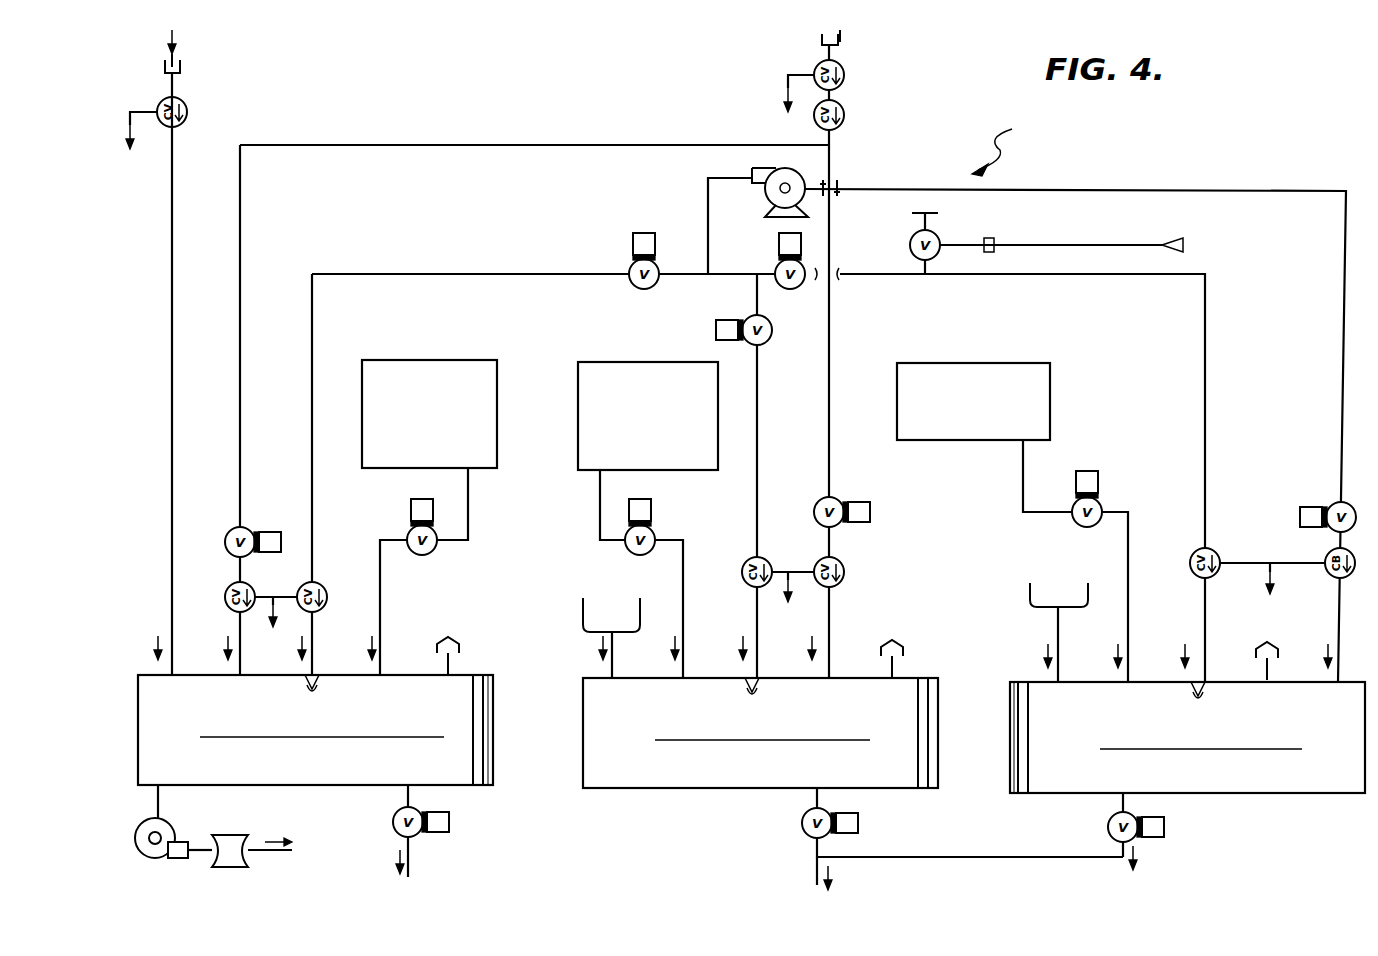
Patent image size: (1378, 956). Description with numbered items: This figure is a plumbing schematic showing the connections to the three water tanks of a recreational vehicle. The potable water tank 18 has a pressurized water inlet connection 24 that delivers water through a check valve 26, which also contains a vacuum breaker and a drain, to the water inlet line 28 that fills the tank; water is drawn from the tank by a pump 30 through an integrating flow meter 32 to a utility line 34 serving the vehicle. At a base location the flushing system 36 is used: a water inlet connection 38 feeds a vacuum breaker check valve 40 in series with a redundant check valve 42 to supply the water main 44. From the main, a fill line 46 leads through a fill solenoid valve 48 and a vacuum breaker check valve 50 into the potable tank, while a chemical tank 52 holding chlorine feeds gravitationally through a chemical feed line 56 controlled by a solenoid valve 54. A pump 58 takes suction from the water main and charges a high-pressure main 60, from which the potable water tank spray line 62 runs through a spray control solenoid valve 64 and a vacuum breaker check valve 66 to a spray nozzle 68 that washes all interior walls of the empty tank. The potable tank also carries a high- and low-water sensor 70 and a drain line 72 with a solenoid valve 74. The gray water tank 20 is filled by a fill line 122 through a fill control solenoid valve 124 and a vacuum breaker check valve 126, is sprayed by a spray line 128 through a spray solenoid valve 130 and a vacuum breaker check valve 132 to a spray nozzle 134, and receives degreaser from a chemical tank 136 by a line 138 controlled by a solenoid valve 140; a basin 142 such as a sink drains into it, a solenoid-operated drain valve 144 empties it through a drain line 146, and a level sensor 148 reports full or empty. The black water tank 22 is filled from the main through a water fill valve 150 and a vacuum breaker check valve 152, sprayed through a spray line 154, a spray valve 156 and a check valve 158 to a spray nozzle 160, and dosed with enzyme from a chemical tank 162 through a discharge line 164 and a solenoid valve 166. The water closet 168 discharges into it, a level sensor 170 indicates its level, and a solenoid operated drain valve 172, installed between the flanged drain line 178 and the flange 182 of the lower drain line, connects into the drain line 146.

The potable water tank 18 is at (399, 675).
The gray water tank 20 is at (1241, 795).
The black water tank 22 is at (658, 790).
The pressurized water inlet connection 24 is at (184, 66).
The check valve 26 is at (186, 100).
The water inlet line 28 is at (173, 212).
The pump 30 is at (176, 828).
The integrating flow meter 32 is at (250, 840).
The utility line 34 is at (270, 853).
The flushing system 36 is at (1008, 146).
The water inlet connection 38 is at (846, 38).
The vacuum breaker check valve 40 is at (850, 72).
The check valve 42 is at (847, 111).
The water main 44 is at (832, 162).
The fill line 46 is at (242, 216).
The fill solenoid valve 48 is at (247, 530).
The vacuum breaker check valve 50 is at (230, 609).
The chemical tank 52 is at (438, 360).
The solenoid valve 54 is at (435, 549).
The chemical feed line 56 is at (468, 515).
The pump 58 is at (765, 199).
The high-pressure main 60 is at (726, 276).
The potable water tank spray line 62 is at (455, 272).
The potable water tank spray control solenoid valve 64 is at (632, 266).
The vacuum breaker check valve 66 is at (318, 583).
The spray nozzle 68 is at (322, 676).
The high- and low-water sensor 70 is at (494, 681).
The drain line 72 is at (406, 797).
The solenoid valve 74 is at (420, 836).
The fill line 122 is at (1345, 235).
The fill control solenoid valve 124 is at (1330, 505).
The vacuum breaker check valve 126 is at (1333, 578).
The spray line 128 is at (1068, 278).
The spray solenoid valve 130 is at (784, 248).
The vacuum breaker check valve 132 is at (1197, 548).
The spray nozzle 134 is at (1206, 698).
The chemical tank 136 is at (986, 363).
The line 138 is at (1023, 477).
The solenoid valve 140 is at (1075, 525).
The basin 142 is at (1036, 586).
The solenoid-operated drain valve 144 is at (1107, 826).
The drain line 146 is at (815, 871).
The level sensor 148 is at (1010, 697).
The water fill valve 150 is at (817, 498).
The vacuum breaker check valve 152 is at (842, 562).
The spray line 154 is at (760, 395).
The spray valve 156 is at (771, 318).
The check valve 158 is at (746, 558).
The spray nozzle 160 is at (746, 681).
The chemical tank 162 is at (634, 362).
The discharge line 164 is at (600, 503).
The solenoid valve 166 is at (626, 550).
The water closet 168 is at (595, 603).
The level sensor 170 is at (940, 696).
The solenoid operated drain valve 172 is at (800, 821).
The drain line 178 is at (817, 798).
The flange 182 is at (815, 847).